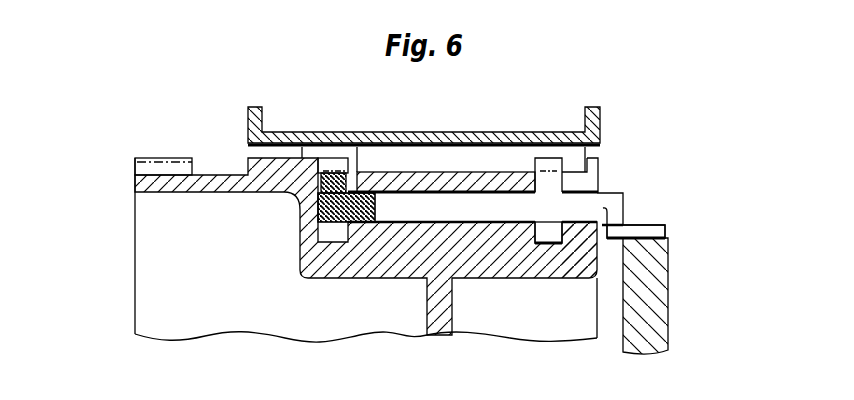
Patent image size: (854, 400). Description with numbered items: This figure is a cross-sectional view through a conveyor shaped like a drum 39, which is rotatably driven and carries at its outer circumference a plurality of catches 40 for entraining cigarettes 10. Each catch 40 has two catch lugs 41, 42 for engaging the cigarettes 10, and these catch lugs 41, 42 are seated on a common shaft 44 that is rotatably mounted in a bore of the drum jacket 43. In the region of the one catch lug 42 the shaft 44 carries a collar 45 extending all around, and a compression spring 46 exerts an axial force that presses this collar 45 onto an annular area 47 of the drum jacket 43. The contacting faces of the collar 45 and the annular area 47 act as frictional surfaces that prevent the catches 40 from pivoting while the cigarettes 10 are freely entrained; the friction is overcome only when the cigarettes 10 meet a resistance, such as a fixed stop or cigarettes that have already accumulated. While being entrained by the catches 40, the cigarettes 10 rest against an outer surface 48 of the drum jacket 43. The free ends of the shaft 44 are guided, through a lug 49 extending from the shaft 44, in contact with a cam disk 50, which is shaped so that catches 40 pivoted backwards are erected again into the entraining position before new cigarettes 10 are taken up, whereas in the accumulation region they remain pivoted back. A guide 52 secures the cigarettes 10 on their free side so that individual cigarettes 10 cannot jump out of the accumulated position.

The cigarettes 10 is at (517, 155).
The drum 39 is at (380, 340).
The catches 40 is at (633, 187).
The catch lug 41 is at (338, 158).
The catch lug 42 is at (552, 167).
The drum jacket 43 is at (305, 265).
The shaft 44 is at (470, 197).
The collar 45 is at (540, 235).
The compression spring 46 is at (317, 205).
The annular area 47 is at (563, 227).
The outer surface 48 is at (432, 172).
The lug 49 is at (656, 231).
The cam disk 50 is at (655, 288).
The guide 52 is at (285, 142).